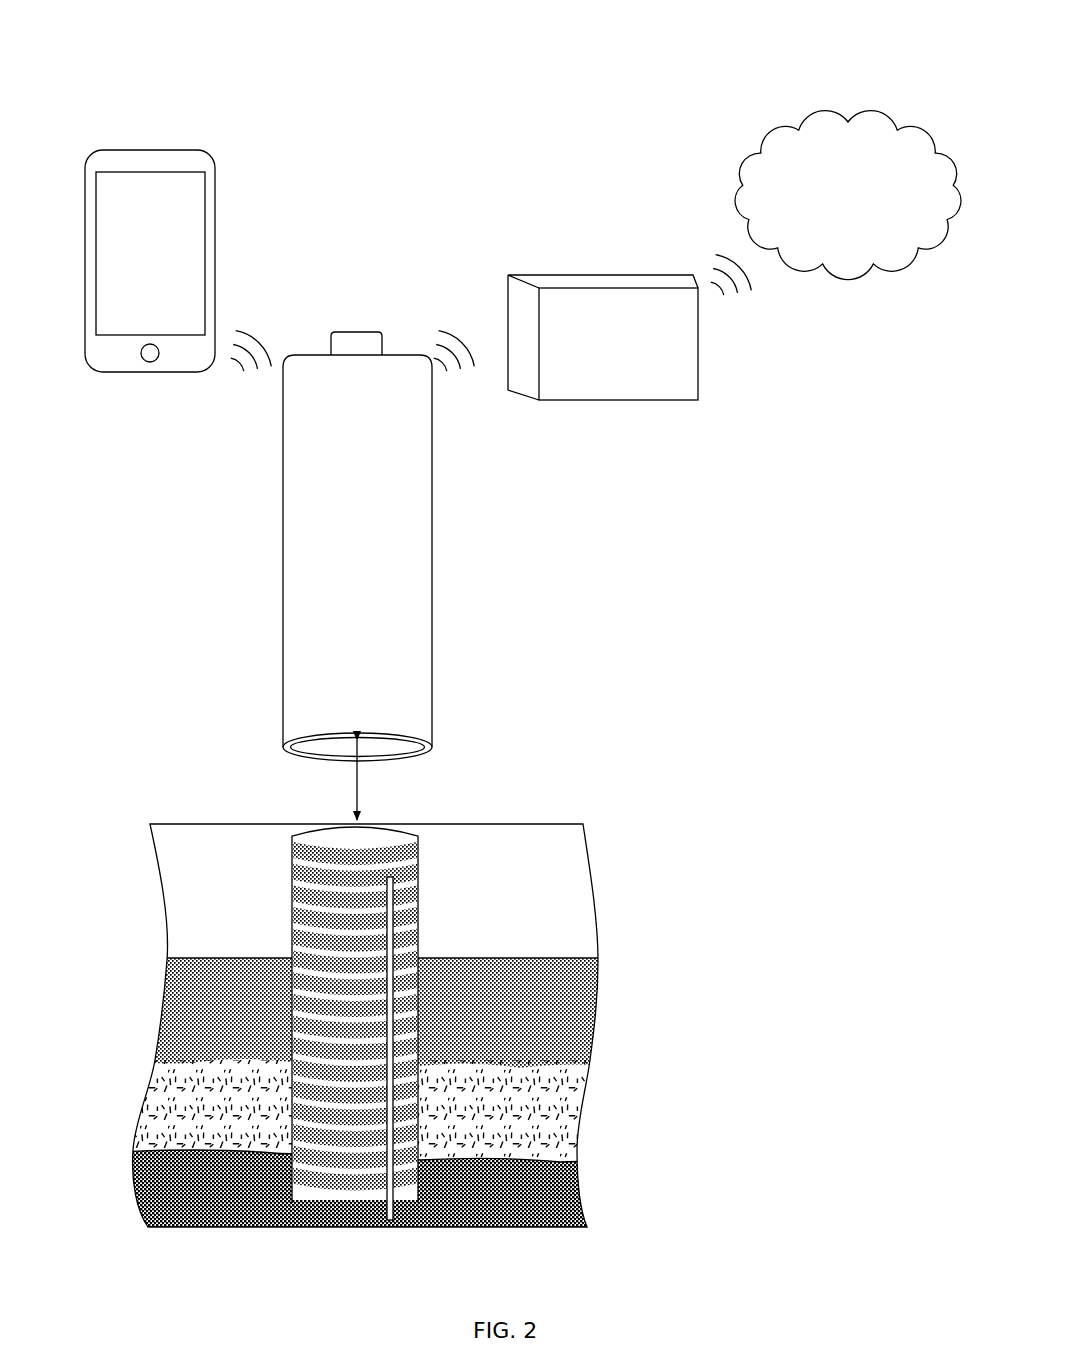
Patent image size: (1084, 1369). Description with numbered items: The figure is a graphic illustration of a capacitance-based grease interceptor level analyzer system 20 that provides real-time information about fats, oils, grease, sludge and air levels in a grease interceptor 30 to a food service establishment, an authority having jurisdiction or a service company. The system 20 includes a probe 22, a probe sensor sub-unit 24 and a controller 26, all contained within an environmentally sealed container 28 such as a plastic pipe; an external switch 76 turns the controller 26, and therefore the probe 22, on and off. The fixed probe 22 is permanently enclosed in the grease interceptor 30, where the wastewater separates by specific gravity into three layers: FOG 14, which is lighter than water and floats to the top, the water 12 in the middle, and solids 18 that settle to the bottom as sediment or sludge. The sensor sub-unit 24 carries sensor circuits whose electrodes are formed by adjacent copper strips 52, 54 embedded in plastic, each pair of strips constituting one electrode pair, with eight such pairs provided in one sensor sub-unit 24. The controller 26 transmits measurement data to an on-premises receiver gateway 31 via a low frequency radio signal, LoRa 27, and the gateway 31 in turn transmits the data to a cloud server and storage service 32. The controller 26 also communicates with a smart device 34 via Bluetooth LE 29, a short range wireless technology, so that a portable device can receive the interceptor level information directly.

The grease interceptor level analyzer (GILA) system 20 is at (717, 50).
The smart device 34 is at (162, 148).
The Bluetooth LE (BLE) 29 is at (258, 445).
The probe 22 is at (366, 518).
The controller 26 is at (400, 365).
The environmentally sealed container 28 is at (282, 655).
The external switch 76 is at (358, 331).
The low frequency radio signal (LoRa) 27 is at (478, 437).
The gateway 31 is at (597, 279).
The cloud server and storage 32 is at (840, 116).
The probe sensor sub-unit 24 is at (357, 1001).
The copper strip 52 is at (292, 859).
The copper strip 54 is at (292, 883).
The grease interceptor 30 is at (399, 1025).
The FOG 14 is at (527, 1044).
The wastewater 12 is at (527, 1139).
The solids 18 is at (527, 1201).